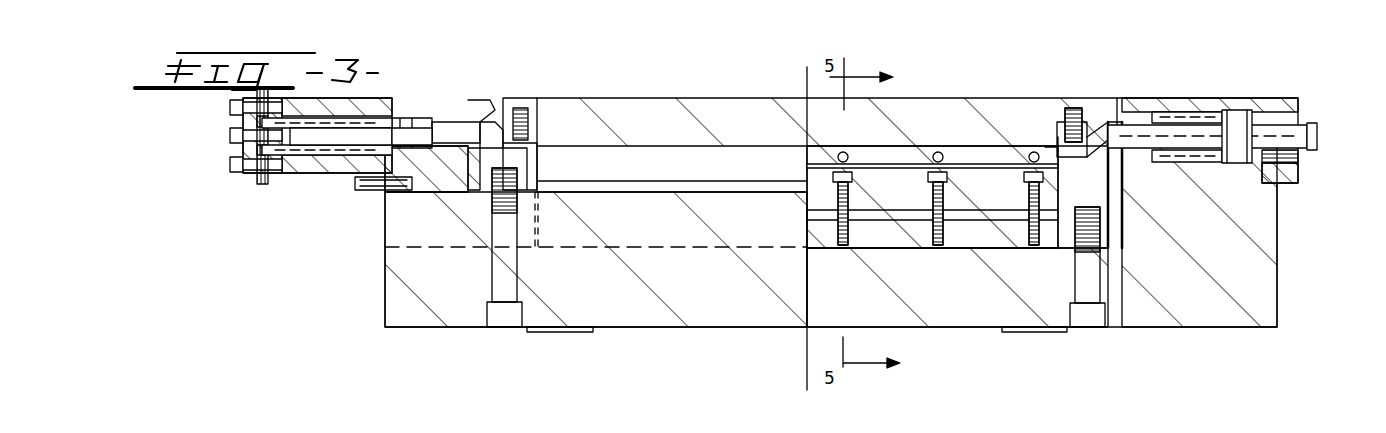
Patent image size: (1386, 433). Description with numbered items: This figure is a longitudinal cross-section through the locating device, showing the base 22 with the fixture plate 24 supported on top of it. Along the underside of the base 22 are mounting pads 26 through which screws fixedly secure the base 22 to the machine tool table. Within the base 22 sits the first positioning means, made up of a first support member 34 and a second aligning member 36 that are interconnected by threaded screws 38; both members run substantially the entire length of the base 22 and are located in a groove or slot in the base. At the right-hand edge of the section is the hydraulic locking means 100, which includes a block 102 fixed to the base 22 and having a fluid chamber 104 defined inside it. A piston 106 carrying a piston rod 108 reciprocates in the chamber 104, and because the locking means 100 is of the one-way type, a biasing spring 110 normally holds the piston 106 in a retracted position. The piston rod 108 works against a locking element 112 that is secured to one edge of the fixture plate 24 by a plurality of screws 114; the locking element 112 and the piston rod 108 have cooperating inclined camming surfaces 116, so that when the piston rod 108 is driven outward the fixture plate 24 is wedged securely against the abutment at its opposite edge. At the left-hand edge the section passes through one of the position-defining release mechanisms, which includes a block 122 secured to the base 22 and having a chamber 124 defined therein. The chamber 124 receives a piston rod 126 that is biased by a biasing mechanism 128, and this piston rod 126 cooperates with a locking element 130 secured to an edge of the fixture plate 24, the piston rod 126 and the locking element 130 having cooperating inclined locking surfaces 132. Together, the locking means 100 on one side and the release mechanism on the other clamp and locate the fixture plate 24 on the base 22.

The base 22 is at (963, 333).
The fixture plate 24 is at (995, 93).
The mounting pads 26 is at (563, 333).
The first support member 34 is at (883, 233).
The second aligning member 36 is at (990, 190).
The threaded screws 38 is at (812, 167).
The hydraulic locking means 100 is at (1293, 90).
The block 102 is at (1155, 98).
The fluid chamber 104 is at (1257, 115).
The piston 106 is at (1232, 127).
The piston rod 108 is at (1112, 140).
The biasing spring 110 is at (1190, 113).
The locking element 112 is at (1097, 130).
The screws 114 is at (1063, 130).
The inclined camming surfaces 116 is at (1095, 128).
The block 122 is at (428, 187).
The chamber 124 is at (445, 110).
The piston rod 126 is at (458, 137).
The biasing mechanism 128 is at (323, 145).
The locking element 130 is at (483, 123).
The inclined locking surfaces 132 is at (483, 127).